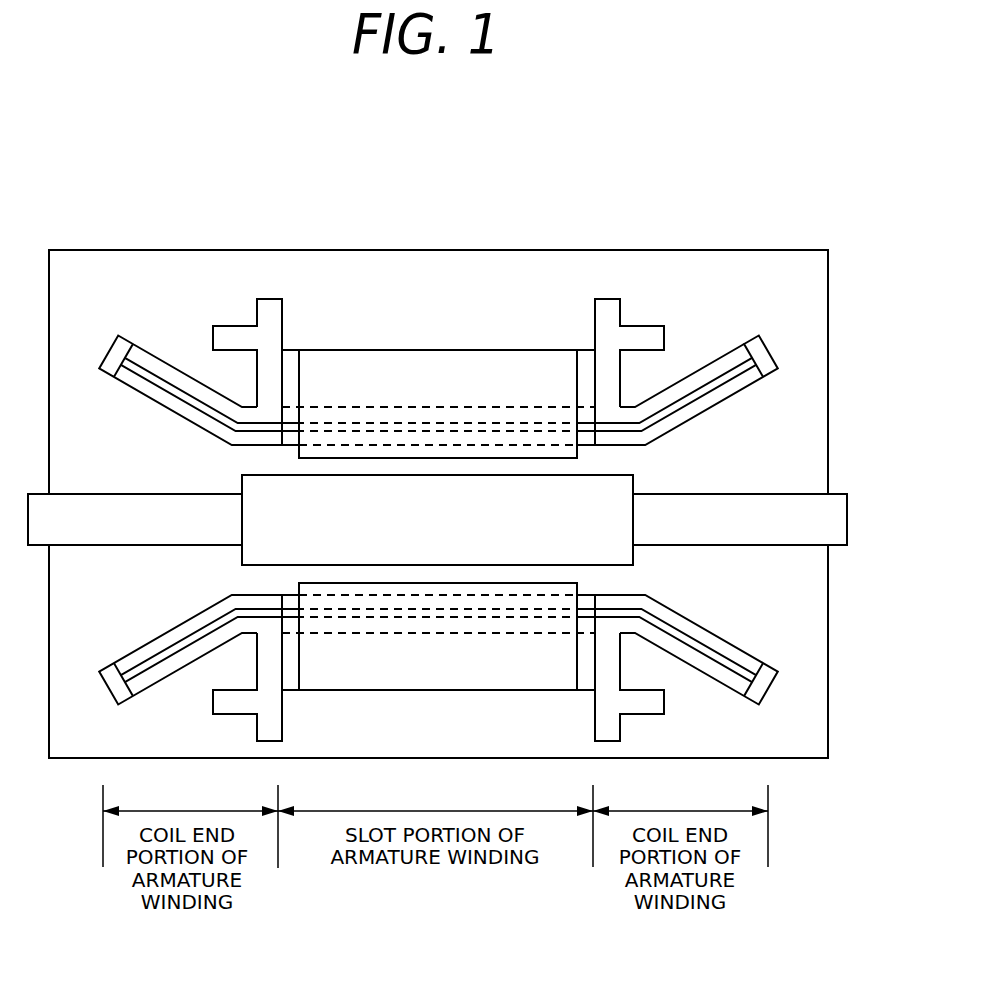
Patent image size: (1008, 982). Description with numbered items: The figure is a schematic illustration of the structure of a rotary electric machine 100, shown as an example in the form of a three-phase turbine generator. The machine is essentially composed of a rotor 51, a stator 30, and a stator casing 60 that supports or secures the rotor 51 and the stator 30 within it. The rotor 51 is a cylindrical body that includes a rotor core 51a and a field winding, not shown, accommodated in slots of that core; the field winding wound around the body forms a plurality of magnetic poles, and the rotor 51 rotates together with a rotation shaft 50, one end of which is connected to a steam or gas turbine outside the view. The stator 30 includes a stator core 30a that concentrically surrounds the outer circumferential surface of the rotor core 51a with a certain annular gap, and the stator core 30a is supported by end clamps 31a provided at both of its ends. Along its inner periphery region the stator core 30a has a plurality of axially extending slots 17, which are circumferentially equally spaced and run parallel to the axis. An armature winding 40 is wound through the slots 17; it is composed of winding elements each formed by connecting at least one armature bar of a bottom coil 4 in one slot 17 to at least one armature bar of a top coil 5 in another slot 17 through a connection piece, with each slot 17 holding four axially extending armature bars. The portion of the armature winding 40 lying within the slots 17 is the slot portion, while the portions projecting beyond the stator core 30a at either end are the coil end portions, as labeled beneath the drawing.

The rotary electric machine 100 is at (470, 435).
The stator casing 60 is at (628, 255).
The stator 30 is at (424, 504).
The stator core 30a is at (502, 360).
The end clamp 31a is at (264, 312).
The slot 17 is at (352, 405).
The armature winding 40 is at (505, 500).
The bottom coil 4 is at (742, 357).
The top coil 5 is at (752, 377).
The rotation shaft 50 is at (733, 500).
The rotor 51 is at (389, 518).
The rotor core 51a is at (263, 550).